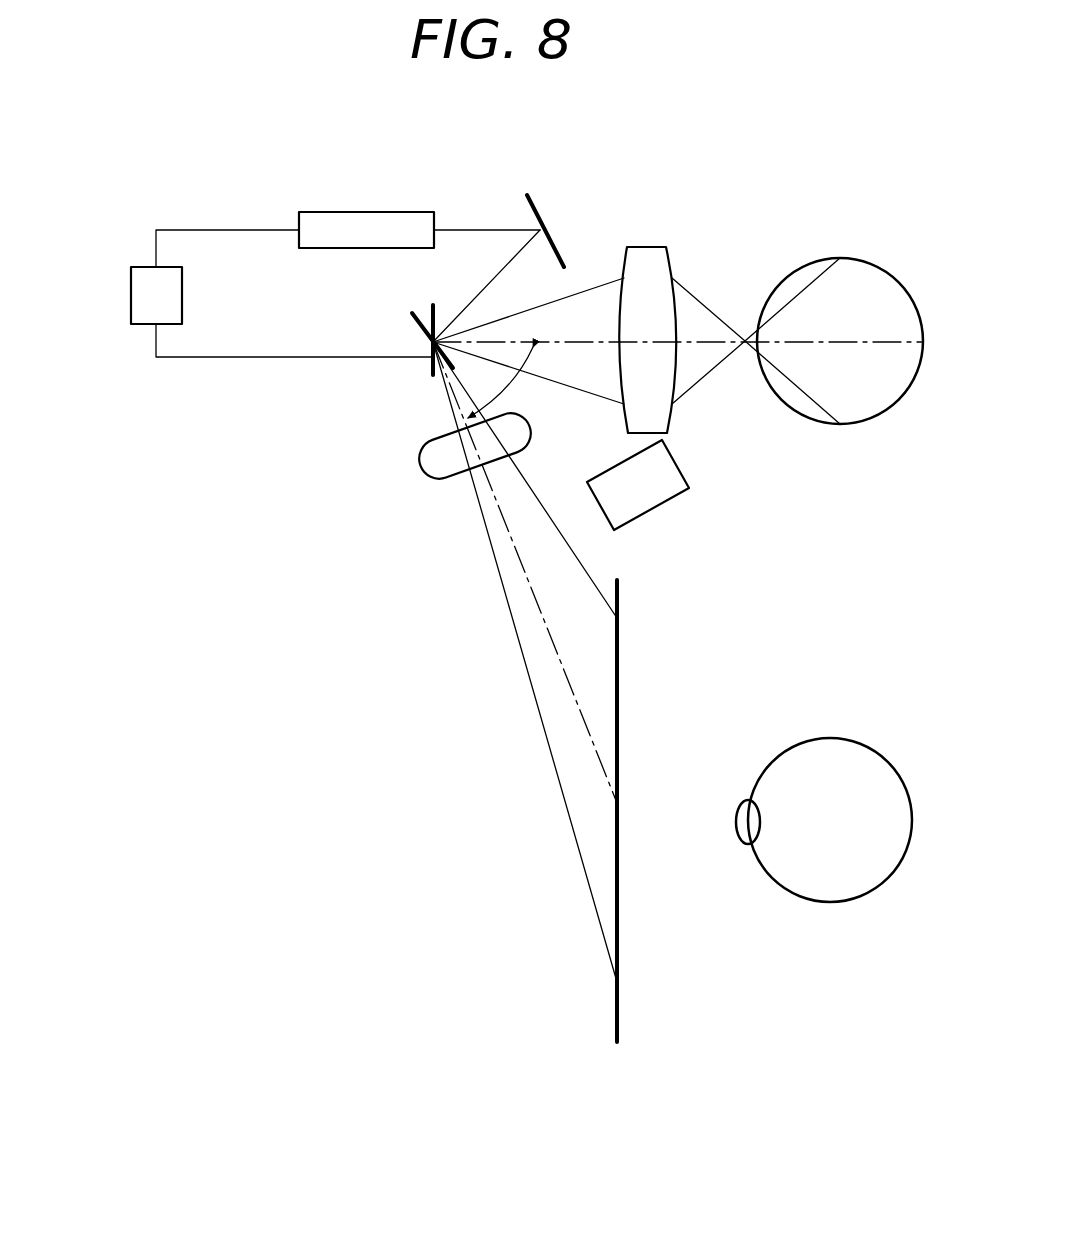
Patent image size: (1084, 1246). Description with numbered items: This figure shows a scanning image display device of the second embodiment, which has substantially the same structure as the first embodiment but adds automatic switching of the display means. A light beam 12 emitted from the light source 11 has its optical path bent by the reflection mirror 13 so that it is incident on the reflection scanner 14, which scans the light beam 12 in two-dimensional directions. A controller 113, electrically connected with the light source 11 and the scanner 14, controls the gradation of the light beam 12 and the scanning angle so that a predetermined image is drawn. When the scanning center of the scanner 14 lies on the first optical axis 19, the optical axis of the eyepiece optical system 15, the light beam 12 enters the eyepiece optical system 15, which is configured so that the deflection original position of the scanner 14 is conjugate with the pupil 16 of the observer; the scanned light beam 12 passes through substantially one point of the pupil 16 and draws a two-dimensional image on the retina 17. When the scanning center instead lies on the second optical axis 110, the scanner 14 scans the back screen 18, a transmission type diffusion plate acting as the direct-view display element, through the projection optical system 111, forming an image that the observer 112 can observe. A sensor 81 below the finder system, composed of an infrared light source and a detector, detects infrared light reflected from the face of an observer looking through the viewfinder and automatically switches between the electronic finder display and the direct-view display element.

The light source 11 is at (365, 212).
The light beam 12 is at (468, 230).
The reflection mirror 13 is at (547, 205).
The reflection scanner 14 is at (430, 347).
The eyepiece optical system 15 is at (650, 247).
The pupil 16 is at (748, 348).
The retina 17 is at (872, 422).
The back screen 18 is at (620, 668).
The first optical axis 19 is at (573, 345).
The sensor 81 is at (655, 508).
The second optical axis 110 is at (532, 597).
The projection optical system 111 is at (417, 460).
The observer 112 is at (873, 890).
The controller 113 is at (131, 288).